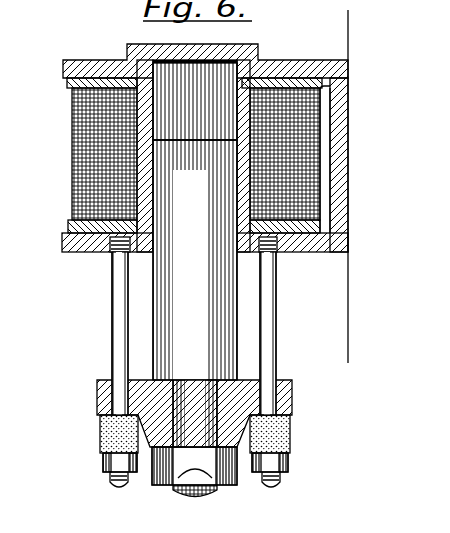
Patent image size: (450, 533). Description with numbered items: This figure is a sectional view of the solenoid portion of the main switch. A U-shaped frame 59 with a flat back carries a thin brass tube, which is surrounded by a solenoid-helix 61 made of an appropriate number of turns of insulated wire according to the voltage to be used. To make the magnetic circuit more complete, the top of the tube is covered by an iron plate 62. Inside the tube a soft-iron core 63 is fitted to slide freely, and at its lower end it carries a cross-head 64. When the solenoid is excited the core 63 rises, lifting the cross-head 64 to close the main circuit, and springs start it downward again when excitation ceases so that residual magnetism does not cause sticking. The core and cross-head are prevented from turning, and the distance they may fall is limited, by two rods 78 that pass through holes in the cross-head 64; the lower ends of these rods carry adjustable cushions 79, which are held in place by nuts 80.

The U-shaped frame 59 is at (348, 128).
The solenoid-helix 61 is at (70, 155).
The iron plate 62 is at (205, 49).
The soft-iron core 63 is at (194, 278).
The cross-head 64 is at (292, 385).
The rods 78 is at (194, 326).
The adjustable cushions 79 is at (101, 435).
The nuts 80 is at (297, 462).